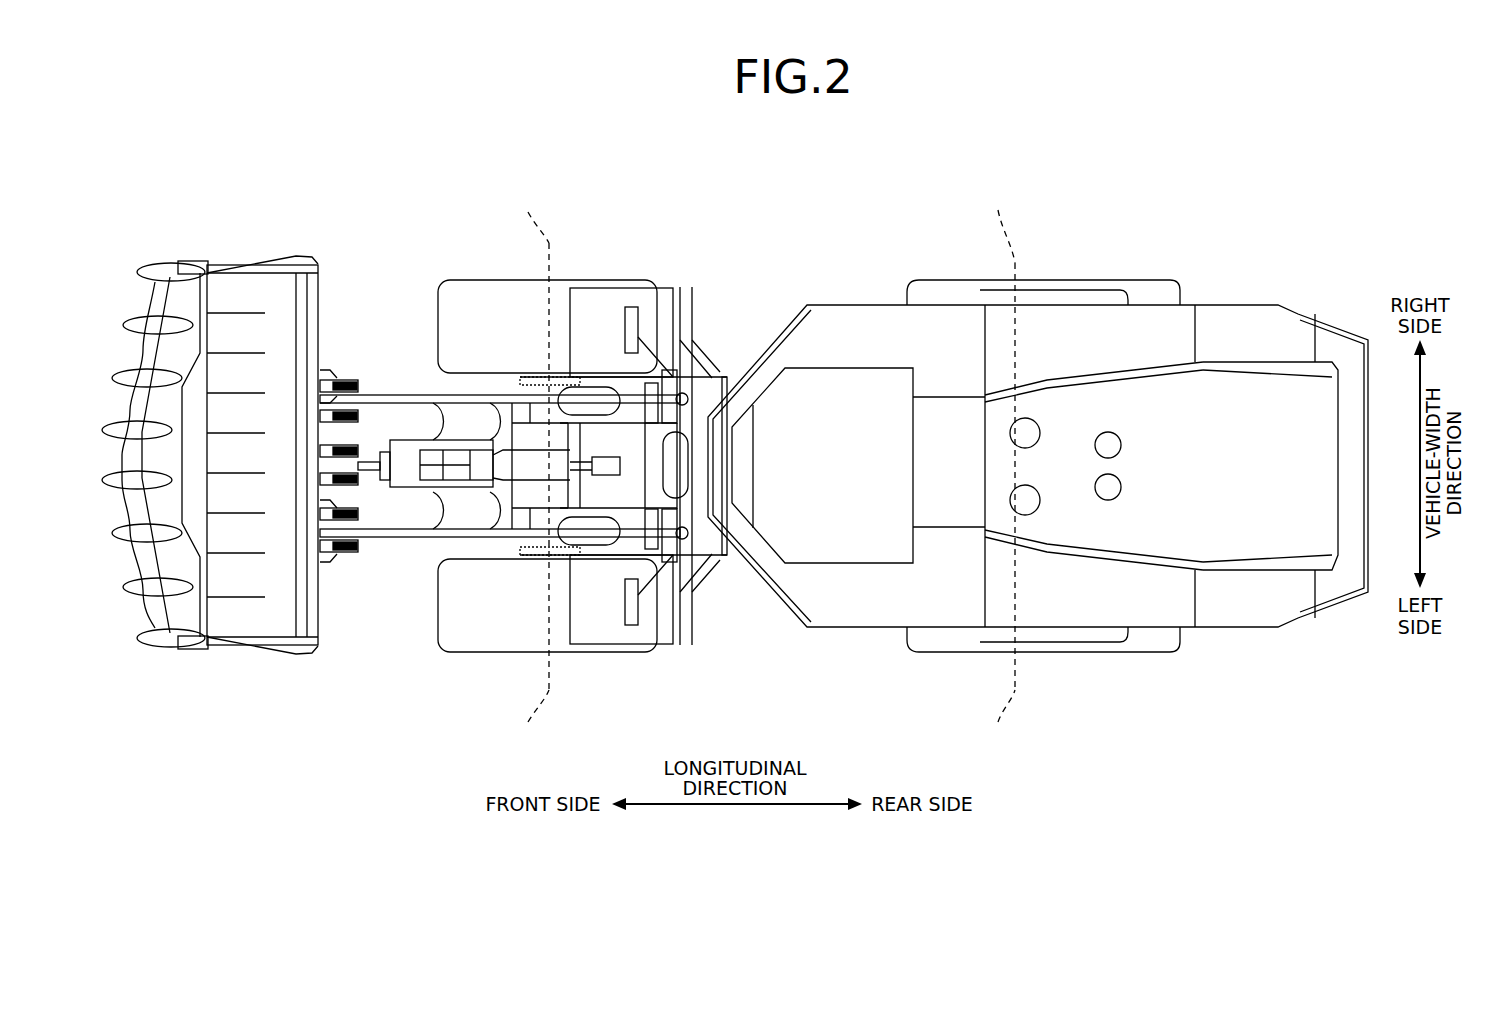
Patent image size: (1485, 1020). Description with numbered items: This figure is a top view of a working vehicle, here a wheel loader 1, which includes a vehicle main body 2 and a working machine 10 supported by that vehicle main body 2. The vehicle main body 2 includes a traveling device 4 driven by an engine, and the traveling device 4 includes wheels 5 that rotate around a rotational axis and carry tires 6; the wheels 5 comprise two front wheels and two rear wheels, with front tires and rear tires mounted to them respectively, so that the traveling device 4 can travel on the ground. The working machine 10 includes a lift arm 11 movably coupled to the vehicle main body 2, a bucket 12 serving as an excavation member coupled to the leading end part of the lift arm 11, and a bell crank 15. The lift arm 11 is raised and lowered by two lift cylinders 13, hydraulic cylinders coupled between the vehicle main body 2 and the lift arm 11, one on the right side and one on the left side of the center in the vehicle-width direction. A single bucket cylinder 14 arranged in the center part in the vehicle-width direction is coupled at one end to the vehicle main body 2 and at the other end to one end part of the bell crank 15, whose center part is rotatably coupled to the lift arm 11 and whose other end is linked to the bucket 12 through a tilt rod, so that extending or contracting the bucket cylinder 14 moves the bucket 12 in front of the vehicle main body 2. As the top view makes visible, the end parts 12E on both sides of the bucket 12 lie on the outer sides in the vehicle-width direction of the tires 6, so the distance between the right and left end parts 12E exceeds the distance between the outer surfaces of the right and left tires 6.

The wheel loader 1 is at (1232, 182).
The vehicle main body 2 is at (1217, 296).
The traveling device 4 is at (1128, 668).
The wheels 5 is at (562, 280).
The tires 6 is at (472, 280).
The working machine 10 is at (387, 212).
The lift arm 11 is at (395, 396).
The bucket 12 is at (301, 266).
The end parts 12E is at (278, 258).
The lift cylinder 13 is at (628, 394).
The bucket cylinder 14 is at (535, 466).
The bell crank 15 is at (367, 466).